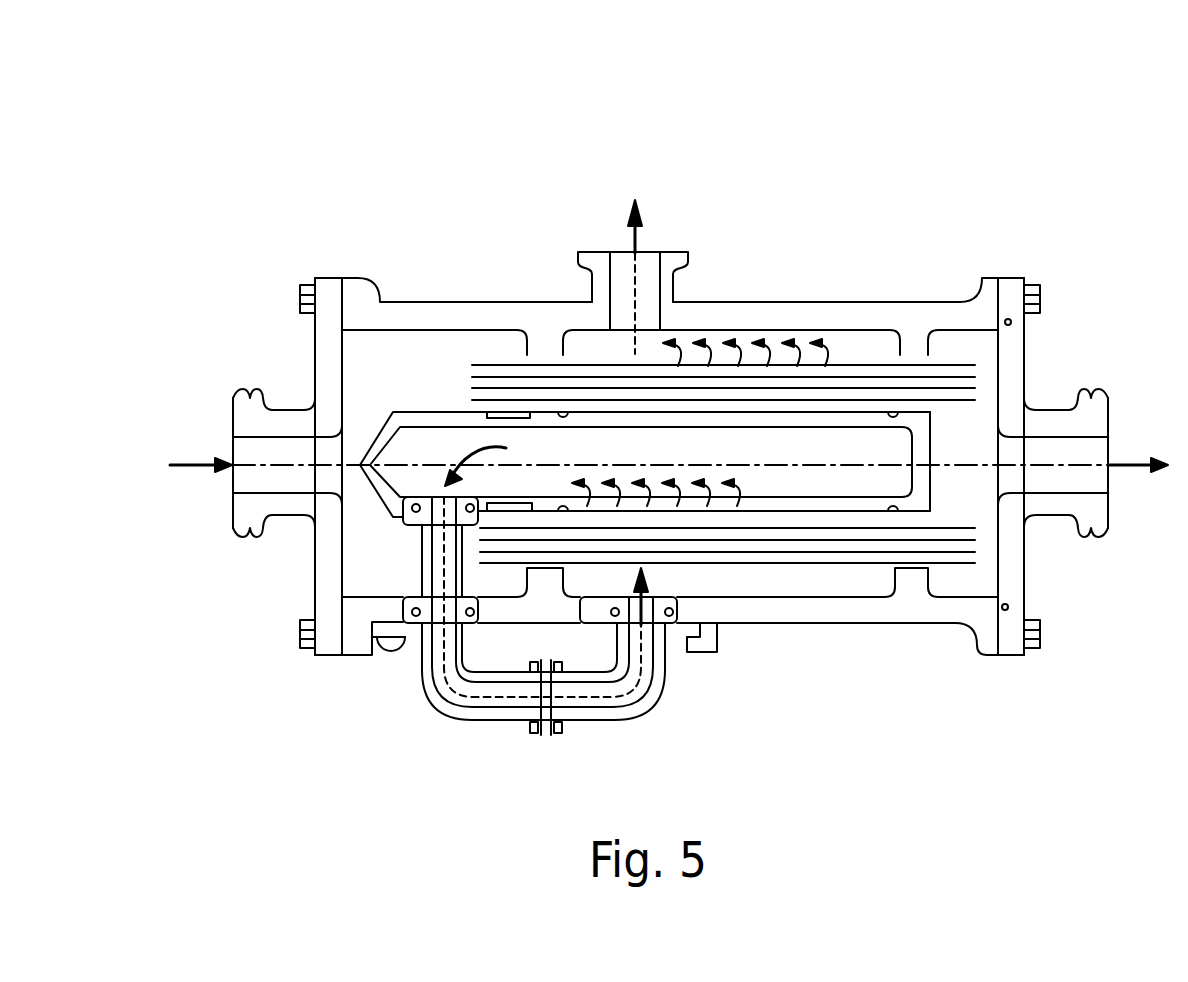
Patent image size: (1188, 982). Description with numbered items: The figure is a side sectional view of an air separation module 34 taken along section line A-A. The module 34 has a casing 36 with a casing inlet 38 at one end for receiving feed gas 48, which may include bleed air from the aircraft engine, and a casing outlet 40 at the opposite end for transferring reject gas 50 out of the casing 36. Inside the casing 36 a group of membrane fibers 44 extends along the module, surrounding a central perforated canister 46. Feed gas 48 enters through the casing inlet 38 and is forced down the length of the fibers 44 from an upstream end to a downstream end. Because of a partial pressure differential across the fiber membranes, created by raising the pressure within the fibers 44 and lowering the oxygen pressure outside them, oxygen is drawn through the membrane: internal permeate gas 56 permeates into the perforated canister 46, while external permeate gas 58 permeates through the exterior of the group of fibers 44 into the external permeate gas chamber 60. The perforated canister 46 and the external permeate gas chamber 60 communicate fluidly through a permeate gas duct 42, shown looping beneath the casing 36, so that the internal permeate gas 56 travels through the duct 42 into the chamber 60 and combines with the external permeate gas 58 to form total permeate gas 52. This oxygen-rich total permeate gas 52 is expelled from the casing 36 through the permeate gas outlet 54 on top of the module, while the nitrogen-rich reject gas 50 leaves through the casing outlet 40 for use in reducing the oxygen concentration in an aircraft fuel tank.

The air separation module 34 is at (862, 153).
The casing 36 is at (738, 301).
The casing inlet 38 is at (250, 530).
The casing outlet 40 is at (1058, 516).
The permeate gas duct 42 is at (622, 720).
The fibers 44 is at (856, 412).
The perforated canister 46 is at (908, 496).
The feed gas 48 is at (205, 458).
The reject gas 50 is at (1133, 456).
The total permeate gas 52 is at (643, 232).
The permeate gas outlet 54 is at (597, 250).
The internal permeate gas 56 is at (567, 480).
The external permeate gas 58 is at (836, 351).
The external permeate gas chamber 60 is at (613, 347).